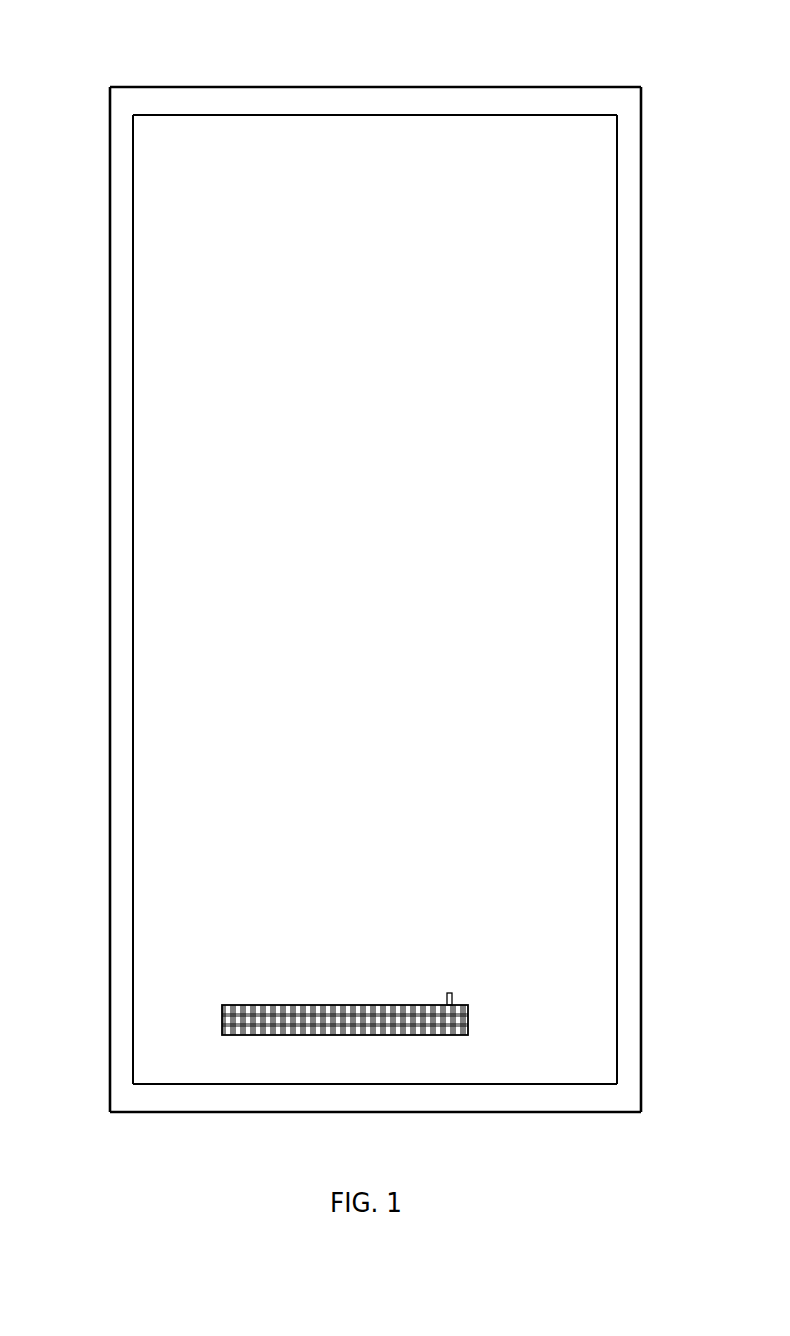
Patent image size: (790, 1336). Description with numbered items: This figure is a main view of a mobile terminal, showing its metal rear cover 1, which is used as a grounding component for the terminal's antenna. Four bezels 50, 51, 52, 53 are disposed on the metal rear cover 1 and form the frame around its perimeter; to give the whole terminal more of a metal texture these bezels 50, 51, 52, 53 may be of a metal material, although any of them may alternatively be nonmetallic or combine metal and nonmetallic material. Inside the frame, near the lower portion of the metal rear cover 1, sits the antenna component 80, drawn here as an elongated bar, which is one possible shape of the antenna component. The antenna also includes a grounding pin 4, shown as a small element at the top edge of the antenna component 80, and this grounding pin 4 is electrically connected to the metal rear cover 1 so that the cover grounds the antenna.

The metal rear cover 1 is at (532, 339).
The grounding pin 4 is at (448, 993).
The bezel 50 is at (220, 87).
The bezel 51 is at (167, 1113).
The bezel 52 is at (641, 806).
The bezel 53 is at (110, 473).
The antenna component 80 is at (288, 1005).